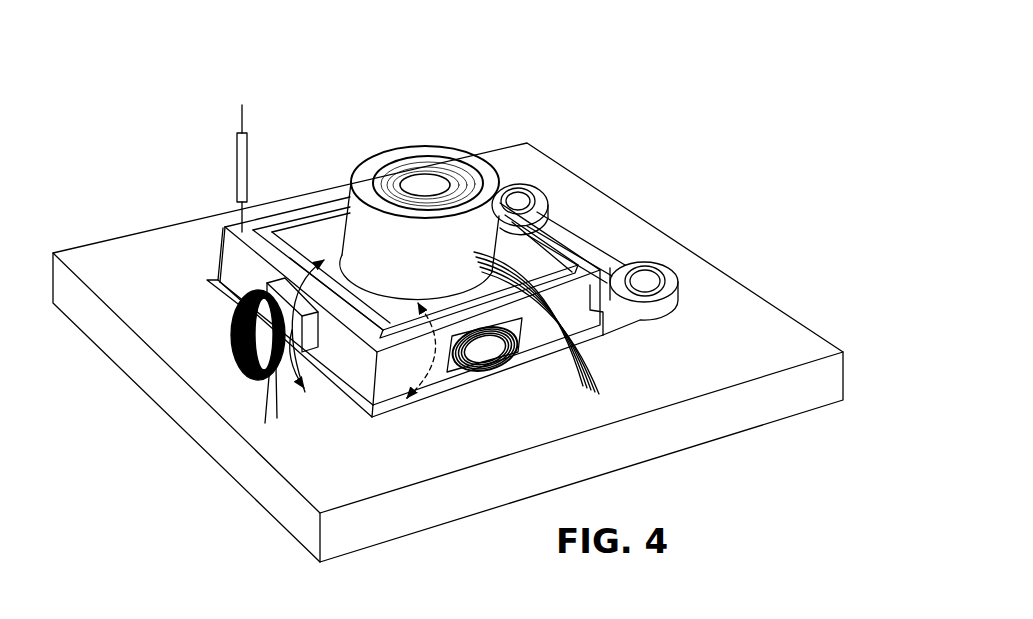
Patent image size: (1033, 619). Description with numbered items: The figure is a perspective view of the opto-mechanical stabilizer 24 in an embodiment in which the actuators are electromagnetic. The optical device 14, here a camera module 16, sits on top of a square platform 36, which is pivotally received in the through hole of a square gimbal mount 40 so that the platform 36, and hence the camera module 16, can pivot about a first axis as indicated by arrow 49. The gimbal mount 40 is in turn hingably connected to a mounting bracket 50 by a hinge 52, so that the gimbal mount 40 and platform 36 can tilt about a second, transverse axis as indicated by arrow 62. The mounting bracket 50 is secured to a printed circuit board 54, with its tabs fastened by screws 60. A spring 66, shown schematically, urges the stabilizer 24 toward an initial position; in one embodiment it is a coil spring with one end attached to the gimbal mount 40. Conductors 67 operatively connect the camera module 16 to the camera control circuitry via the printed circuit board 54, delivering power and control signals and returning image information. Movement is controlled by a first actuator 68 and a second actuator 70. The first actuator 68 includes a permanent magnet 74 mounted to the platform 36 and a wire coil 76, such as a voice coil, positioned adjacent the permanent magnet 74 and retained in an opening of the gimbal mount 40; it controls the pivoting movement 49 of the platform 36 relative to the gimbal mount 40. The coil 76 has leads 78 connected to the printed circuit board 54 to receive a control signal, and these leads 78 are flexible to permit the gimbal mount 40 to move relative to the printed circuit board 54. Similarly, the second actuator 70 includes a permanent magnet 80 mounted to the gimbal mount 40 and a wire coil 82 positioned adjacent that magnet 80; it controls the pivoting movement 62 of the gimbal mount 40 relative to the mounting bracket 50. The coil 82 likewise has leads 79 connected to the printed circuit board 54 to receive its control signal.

The optical device 14 is at (350, 200).
The camera module 16 is at (367, 166).
The opto-mechanical stabilizer 24 is at (461, 116).
The platform 36 is at (318, 230).
The gimbal mount 40 is at (288, 215).
The arrow 49 is at (432, 375).
The mounting bracket 50 is at (563, 245).
The hinge 52 is at (636, 338).
The printed circuit board 54 is at (101, 252).
The screws 60 is at (521, 203).
The arrow 62 is at (240, 262).
The spring 66 is at (237, 165).
The conductors 67 is at (603, 335).
The first actuator 68 is at (540, 402).
The second actuator 70 is at (213, 371).
The permanent magnet 74 is at (464, 290).
The wire coil 76 is at (503, 358).
The leads 78 is at (548, 381).
The leads 79 is at (270, 385).
The permanent magnet 80 is at (314, 318).
The wire coil 82 is at (233, 330).